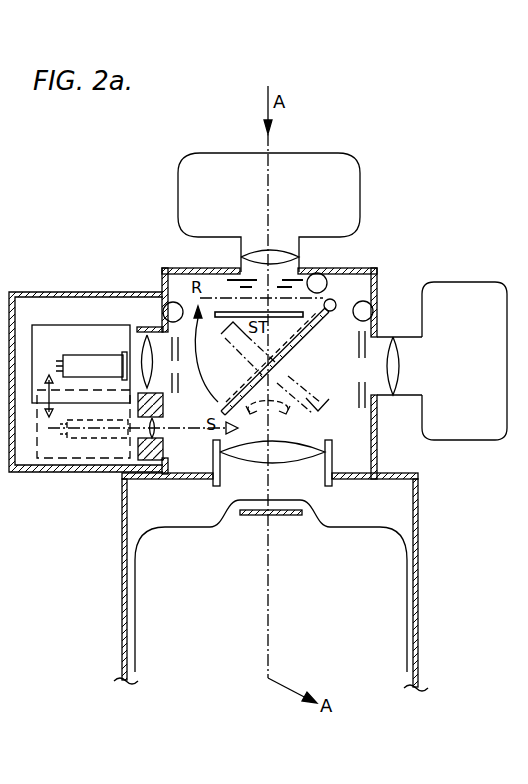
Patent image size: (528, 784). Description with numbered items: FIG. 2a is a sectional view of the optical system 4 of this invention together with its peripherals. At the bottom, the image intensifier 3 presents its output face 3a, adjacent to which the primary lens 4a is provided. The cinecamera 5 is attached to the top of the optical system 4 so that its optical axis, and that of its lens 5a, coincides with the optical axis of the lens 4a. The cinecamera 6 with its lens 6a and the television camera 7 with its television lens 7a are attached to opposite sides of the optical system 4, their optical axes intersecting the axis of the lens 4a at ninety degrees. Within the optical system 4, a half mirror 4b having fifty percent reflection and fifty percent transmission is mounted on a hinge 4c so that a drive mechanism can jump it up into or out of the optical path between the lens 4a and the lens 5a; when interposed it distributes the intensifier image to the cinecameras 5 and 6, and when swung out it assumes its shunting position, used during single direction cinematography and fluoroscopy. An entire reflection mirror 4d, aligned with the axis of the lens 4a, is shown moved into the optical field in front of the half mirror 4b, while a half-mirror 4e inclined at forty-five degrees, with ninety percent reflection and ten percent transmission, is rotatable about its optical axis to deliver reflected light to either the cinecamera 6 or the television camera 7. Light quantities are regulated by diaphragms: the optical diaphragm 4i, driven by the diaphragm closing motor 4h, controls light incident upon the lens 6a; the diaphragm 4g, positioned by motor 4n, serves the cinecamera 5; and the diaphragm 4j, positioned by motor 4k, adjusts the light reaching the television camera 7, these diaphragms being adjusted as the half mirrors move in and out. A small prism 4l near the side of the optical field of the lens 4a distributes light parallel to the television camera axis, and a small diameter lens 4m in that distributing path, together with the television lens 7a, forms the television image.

The image intensifier 3 is at (418, 612).
The output face 3a is at (289, 516).
The optical system 4 is at (356, 268).
The lens 4a is at (251, 458).
The half mirror 4b is at (312, 328).
The hinge 4c is at (335, 303).
The entire reflection mirror 4d is at (224, 328).
The half-mirror 4e is at (295, 362).
The diaphragm 4g is at (227, 281).
The diaphragm closing motor 4h is at (373, 312).
The optical diaphragm 4i is at (361, 412).
The diaphragm 4j is at (186, 386).
The motor 4k is at (163, 288).
The small prism 4l is at (165, 440).
The small diameter lens 4m is at (160, 425).
The motor 4n is at (301, 272).
The cinecamera 5 is at (352, 161).
The lens 5a is at (284, 247).
The cinecamera 6 is at (473, 282).
The lens 6a is at (404, 366).
The television camera 7 is at (48, 335).
The television lens 7a is at (143, 352).